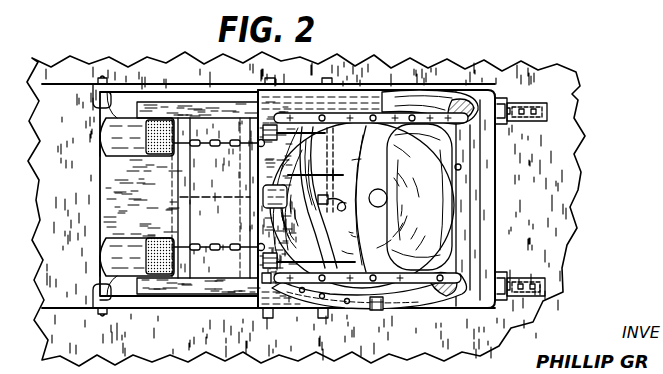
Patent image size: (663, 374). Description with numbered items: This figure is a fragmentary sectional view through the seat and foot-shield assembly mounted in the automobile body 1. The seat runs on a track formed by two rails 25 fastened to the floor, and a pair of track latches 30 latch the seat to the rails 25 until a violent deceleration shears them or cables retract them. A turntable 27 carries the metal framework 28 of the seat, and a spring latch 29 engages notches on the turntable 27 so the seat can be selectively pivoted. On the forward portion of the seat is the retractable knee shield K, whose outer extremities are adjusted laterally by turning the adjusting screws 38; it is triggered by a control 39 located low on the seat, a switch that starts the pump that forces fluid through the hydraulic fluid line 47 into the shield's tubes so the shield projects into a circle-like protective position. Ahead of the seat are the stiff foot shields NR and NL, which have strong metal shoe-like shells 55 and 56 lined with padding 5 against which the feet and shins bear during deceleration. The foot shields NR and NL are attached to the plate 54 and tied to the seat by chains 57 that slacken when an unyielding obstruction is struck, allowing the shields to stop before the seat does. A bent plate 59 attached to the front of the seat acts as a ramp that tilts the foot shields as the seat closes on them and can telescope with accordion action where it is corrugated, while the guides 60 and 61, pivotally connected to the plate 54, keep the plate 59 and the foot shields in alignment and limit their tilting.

The automobile body 1 is at (400, 73).
The padding 5 is at (160, 153).
The rails 25 is at (200, 294).
The turntable 27 is at (414, 156).
The metal framework 28 is at (455, 202).
The spring latch 29 is at (383, 310).
The track latches 30 is at (500, 120).
The adjusting screws 38 is at (262, 178).
The control 39 is at (267, 284).
The hydraulic fluid line 47 is at (345, 182).
The plate 54 is at (103, 195).
The shoe-like shell 55 is at (115, 268).
The shoe-like shell 56 is at (113, 128).
The chains 57 is at (216, 148).
The bent plate 59 is at (205, 203).
The guide 60 is at (135, 312).
The guide 61 is at (163, 84).
The knee shield K is at (324, 227).
The foot shield NR is at (92, 142).
The foot shield NL is at (92, 252).